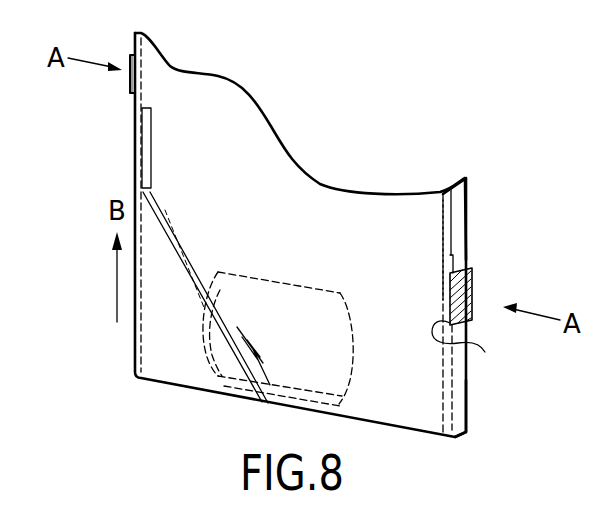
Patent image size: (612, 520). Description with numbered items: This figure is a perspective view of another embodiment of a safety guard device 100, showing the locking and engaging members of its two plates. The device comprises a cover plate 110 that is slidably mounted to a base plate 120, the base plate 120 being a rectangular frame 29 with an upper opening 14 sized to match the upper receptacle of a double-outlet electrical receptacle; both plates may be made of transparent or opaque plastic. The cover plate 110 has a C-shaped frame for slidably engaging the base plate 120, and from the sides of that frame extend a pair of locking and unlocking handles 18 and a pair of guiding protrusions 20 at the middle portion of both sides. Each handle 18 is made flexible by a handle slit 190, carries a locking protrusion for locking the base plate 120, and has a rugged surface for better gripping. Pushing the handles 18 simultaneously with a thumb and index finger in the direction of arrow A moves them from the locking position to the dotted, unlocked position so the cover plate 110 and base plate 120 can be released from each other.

The safety guard device 100 is at (468, 156).
The cover plate 110 is at (474, 201).
The base plate 120 is at (468, 412).
The upper opening 14 is at (329, 360).
The locking and unlocking handle 18 is at (132, 90).
The guiding protrusion 20 is at (150, 158).
The rectangular frame 29 is at (428, 233).
The handle slit 190 is at (481, 348).